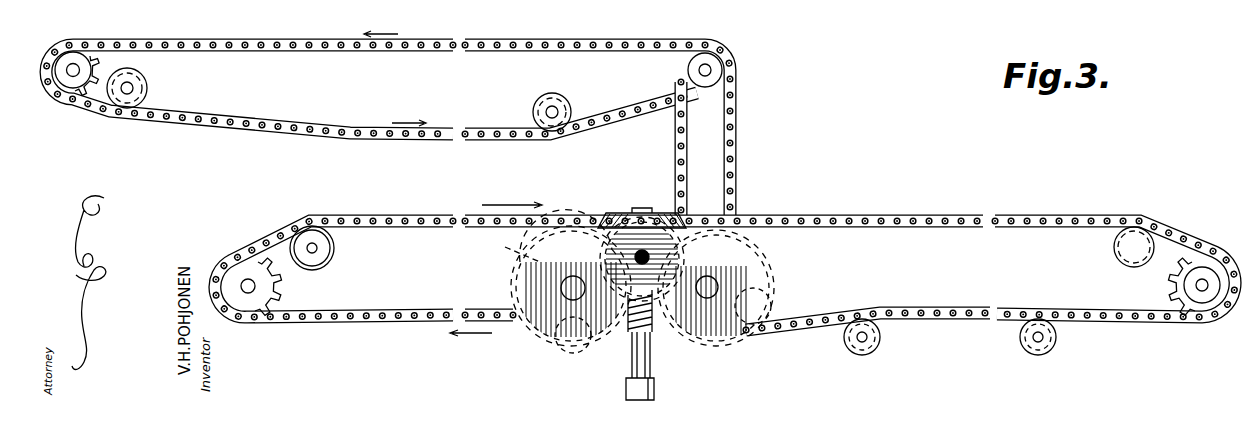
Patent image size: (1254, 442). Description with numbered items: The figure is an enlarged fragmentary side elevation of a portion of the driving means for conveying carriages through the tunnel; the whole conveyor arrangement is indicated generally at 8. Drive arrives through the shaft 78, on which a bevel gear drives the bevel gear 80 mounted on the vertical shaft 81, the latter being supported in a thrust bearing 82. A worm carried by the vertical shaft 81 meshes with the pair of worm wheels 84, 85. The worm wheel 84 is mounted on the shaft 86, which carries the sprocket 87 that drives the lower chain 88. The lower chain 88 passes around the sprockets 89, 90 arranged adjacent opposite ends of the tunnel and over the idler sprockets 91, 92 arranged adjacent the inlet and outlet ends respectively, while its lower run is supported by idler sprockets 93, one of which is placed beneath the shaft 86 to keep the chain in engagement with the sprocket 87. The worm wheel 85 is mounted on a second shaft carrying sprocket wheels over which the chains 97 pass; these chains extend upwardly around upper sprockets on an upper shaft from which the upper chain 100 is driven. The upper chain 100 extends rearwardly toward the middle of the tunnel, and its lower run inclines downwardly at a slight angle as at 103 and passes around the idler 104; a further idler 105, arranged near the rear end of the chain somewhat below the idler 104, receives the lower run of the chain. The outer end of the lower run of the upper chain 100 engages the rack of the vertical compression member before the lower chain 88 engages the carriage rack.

The upper conveyor chain 8 is at (371, 68).
The shaft 78 is at (650, 257).
The bevel gear 80 is at (612, 212).
The vertical shaft 81 is at (632, 363).
The thrust bearing 82 is at (654, 388).
The worm wheel 84 is at (512, 284).
The worm wheel 85 is at (768, 262).
The shaft 86 is at (573, 276).
The sprocket 87 is at (510, 248).
The lower chain 88 is at (440, 212).
The sprocket 89 is at (247, 268).
The sprocket 90 is at (1200, 266).
The idler sprocket 91 is at (313, 228).
The idler sprocket 92 is at (1134, 240).
The idler sprockets 93 is at (574, 352).
The chains 97 is at (737, 200).
The upper chain 100 is at (641, 52).
The downwardly inclined portion 103 is at (100, 108).
The idler 104 is at (140, 88).
The idler 105 is at (553, 98).